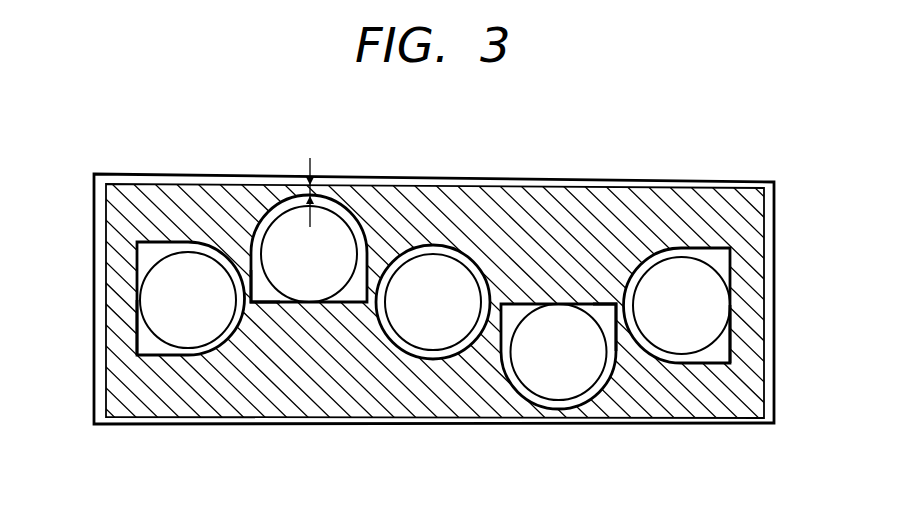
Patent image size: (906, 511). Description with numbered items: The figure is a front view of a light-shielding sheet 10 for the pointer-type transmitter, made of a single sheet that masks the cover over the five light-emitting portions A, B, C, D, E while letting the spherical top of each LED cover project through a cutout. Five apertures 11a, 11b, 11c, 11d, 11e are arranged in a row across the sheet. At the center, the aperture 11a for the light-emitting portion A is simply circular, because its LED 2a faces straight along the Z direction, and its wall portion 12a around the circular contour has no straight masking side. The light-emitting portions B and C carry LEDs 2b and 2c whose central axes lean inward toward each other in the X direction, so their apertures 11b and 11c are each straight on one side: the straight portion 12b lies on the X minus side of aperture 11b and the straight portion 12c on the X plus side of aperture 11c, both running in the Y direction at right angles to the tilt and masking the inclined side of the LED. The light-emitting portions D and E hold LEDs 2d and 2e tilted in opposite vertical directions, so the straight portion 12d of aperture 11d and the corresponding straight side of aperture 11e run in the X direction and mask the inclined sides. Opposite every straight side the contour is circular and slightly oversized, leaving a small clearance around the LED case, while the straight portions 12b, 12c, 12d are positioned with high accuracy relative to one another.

The light-shielding sheet 10 is at (767, 229).
The light-emitting diode 2a is at (437, 267).
The light-emitting diode 2b is at (190, 262).
The light-emitting diode 2c is at (659, 343).
The light-emitting diode 2d is at (283, 220).
The light-emitting diode 2e is at (533, 378).
The aperture 11a is at (432, 356).
The aperture 11b is at (188, 349).
The aperture 11c is at (688, 364).
The aperture 11d is at (340, 203).
The aperture 11e is at (586, 409).
The wall portion 12a is at (593, 303).
The straight portion 12b is at (137, 328).
The straight portion 12c is at (732, 342).
The straight portion 12d is at (251, 308).
The light-emitting portion A is at (393, 349).
The light-emitting portion B is at (152, 366).
The light-emitting portion C is at (718, 370).
The light-emitting portion D is at (290, 310).
The light-emitting portion E is at (498, 385).